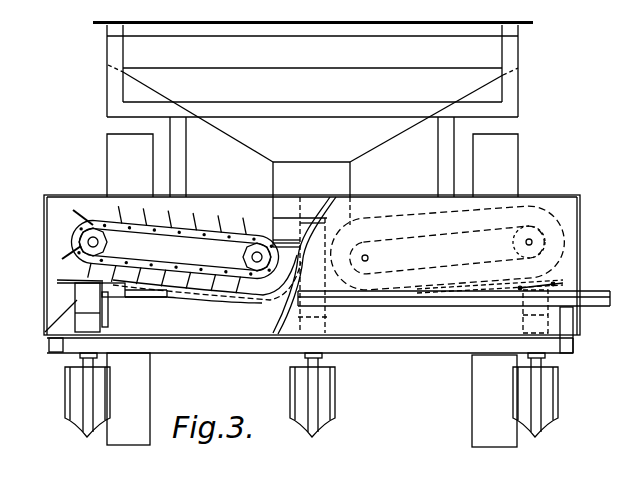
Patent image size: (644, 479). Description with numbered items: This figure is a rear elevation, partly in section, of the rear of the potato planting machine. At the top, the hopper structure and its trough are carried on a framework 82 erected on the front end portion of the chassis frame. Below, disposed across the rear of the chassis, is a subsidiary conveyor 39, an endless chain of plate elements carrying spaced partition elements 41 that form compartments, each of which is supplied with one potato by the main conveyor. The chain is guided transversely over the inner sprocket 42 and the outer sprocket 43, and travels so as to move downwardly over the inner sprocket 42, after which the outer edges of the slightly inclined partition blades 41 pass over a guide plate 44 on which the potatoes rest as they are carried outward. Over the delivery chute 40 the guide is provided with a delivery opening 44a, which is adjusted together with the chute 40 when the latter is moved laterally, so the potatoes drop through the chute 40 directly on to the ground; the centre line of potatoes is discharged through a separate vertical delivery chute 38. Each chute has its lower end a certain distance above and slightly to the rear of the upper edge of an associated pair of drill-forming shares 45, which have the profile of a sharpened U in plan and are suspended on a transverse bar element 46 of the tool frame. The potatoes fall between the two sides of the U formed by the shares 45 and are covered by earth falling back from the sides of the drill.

The framework 82 is at (513, 108).
The vertical delivery chute 40 is at (585, 333).
The transverse bar element 46 is at (242, 352).
The vertical delivery chute 38 is at (411, 293).
The subsidiary conveyor 39 is at (531, 209).
The partition element 41 is at (117, 222).
The inner sprocket 42 is at (243, 253).
The sprocket 43 is at (108, 238).
The guide plate 44 is at (187, 299).
The delivery opening 44a is at (137, 280).
The drill-forming share 45 is at (110, 402).